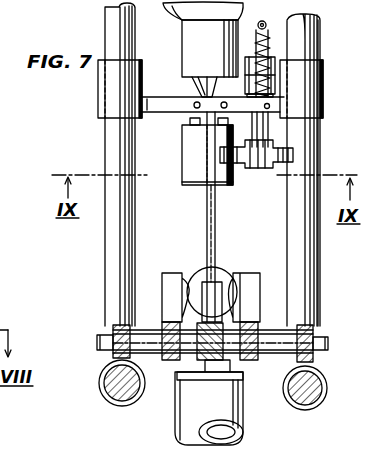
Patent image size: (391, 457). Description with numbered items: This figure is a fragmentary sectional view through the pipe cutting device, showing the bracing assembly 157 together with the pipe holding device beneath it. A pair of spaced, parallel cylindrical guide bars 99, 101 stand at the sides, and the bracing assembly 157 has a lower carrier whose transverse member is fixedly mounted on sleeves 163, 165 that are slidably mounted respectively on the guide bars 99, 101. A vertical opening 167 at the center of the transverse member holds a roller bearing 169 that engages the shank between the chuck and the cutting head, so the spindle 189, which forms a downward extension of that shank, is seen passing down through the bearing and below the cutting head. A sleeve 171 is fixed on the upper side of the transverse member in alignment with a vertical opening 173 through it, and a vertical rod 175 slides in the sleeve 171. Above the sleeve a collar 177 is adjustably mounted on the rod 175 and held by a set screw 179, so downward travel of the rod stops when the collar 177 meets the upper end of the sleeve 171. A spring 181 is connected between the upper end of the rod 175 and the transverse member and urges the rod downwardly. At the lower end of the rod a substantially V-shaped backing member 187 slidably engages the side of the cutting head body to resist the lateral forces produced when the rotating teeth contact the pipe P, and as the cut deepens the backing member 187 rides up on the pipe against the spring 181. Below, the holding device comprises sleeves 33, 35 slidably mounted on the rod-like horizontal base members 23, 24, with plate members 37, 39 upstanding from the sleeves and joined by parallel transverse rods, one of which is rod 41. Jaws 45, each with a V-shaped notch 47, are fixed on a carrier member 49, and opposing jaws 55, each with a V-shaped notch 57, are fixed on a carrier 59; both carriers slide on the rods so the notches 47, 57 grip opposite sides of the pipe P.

The guide bar 101 is at (110, 35).
The sleeve 165 is at (110, 88).
The roller bearing 169 is at (190, 93).
The vertical rod 175 is at (203, 49).
The spring 181 is at (312, 22).
The collar 177 is at (272, 52).
The set screw 179 is at (277, 68).
The sleeve 171 is at (270, 90).
The vertical opening 173 is at (300, 102).
The sleeve 163 is at (321, 108).
The guide bar 99 is at (321, 153).
The bracing assembly 157 is at (51, 125).
The vertical opening 167 is at (177, 122).
The backing member 187 is at (237, 167).
The spindle 189 is at (205, 205).
The jaws 55 is at (161, 268).
The V-shaped notch 57 is at (198, 270).
The pipe P is at (222, 262).
The V-shaped notch 47 is at (235, 269).
The jaws 45 is at (287, 268).
The carrier member 49 is at (300, 305).
The plate member 39 is at (107, 323).
The plate member 37 is at (320, 318).
The horizontal member 24 is at (100, 394).
The sleeve 35 is at (122, 401).
The carrier 59 is at (168, 363).
The rod 41 is at (275, 353).
The horizontal member 23 is at (328, 388).
The sleeve 33 is at (312, 408).